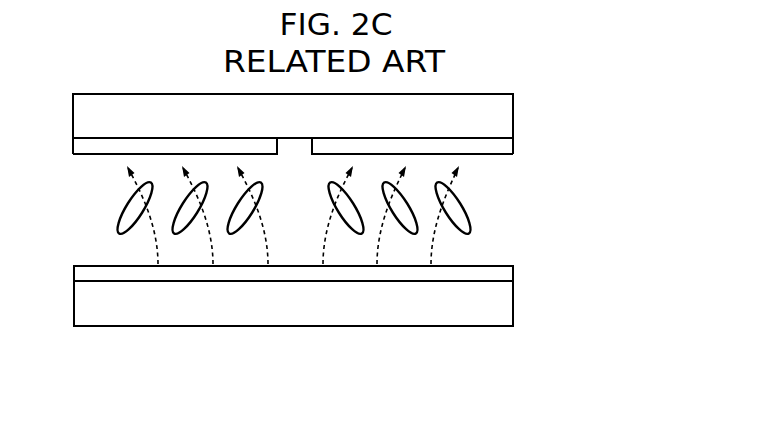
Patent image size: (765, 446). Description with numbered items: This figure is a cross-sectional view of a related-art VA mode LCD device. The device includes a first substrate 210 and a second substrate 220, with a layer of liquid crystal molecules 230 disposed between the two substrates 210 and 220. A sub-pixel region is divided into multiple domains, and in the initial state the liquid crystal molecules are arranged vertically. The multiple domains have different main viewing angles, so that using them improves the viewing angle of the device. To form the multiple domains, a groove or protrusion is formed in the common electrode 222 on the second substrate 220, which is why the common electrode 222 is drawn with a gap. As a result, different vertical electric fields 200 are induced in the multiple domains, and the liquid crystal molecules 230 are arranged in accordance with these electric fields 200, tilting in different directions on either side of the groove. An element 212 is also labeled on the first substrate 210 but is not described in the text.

The vertical electric fields 200 is at (323, 250).
The first substrate 210 is at (504, 312).
The lower electrode 212 is at (512, 271).
The second substrate 220 is at (503, 126).
The common electrode 222 is at (507, 143).
The layer of liquid crystal molecules 230 is at (525, 154).